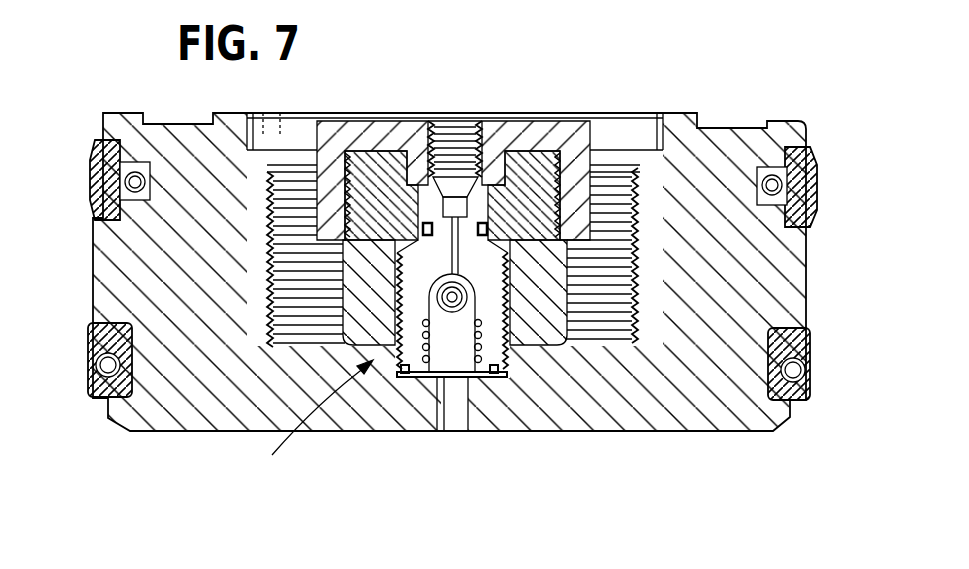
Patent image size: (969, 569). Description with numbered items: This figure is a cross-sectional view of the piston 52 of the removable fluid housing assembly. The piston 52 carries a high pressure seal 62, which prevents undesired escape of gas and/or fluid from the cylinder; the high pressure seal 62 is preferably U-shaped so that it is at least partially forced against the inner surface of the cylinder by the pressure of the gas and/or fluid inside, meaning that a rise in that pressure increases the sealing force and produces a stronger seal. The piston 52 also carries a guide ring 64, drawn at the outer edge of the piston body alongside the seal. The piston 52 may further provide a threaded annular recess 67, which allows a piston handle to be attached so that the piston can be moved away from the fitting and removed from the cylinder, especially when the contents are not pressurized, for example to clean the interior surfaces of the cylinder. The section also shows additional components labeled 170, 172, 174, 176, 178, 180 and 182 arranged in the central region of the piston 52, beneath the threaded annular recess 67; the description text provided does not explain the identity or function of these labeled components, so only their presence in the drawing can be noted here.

The piston 52 is at (760, 109).
The high pressure seal 62 is at (107, 338).
The guide ring 64 is at (97, 190).
The threaded annular recess 67 is at (628, 187).
The valve assembly 170 is at (310, 423).
The nozzle carrier 172 is at (410, 338).
The threaded cap 174 is at (528, 140).
The adjusting screw 176 is at (457, 157).
The nozzle 178 is at (447, 310).
The outlet channel 180 is at (452, 422).
The spring seat 182 is at (482, 372).